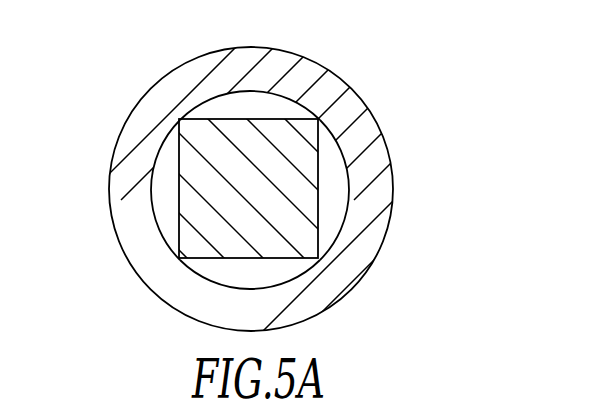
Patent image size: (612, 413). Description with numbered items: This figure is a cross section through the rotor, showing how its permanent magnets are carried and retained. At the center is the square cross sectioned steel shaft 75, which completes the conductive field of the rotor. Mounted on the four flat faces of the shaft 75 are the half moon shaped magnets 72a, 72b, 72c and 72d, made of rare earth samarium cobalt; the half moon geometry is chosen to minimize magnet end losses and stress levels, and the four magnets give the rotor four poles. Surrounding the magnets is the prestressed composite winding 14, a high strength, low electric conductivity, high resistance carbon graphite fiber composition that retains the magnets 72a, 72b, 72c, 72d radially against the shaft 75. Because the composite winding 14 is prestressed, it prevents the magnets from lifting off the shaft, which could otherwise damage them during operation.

The prestressed composite winding 14 is at (367, 108).
The half moon shaped magnet 72a is at (255, 103).
The half moon shaped magnet 72b is at (335, 173).
The half moon shaped magnet 72c is at (220, 272).
The half moon shaped magnet 72d is at (168, 188).
The square cross sectioned steel shaft 75 is at (310, 232).